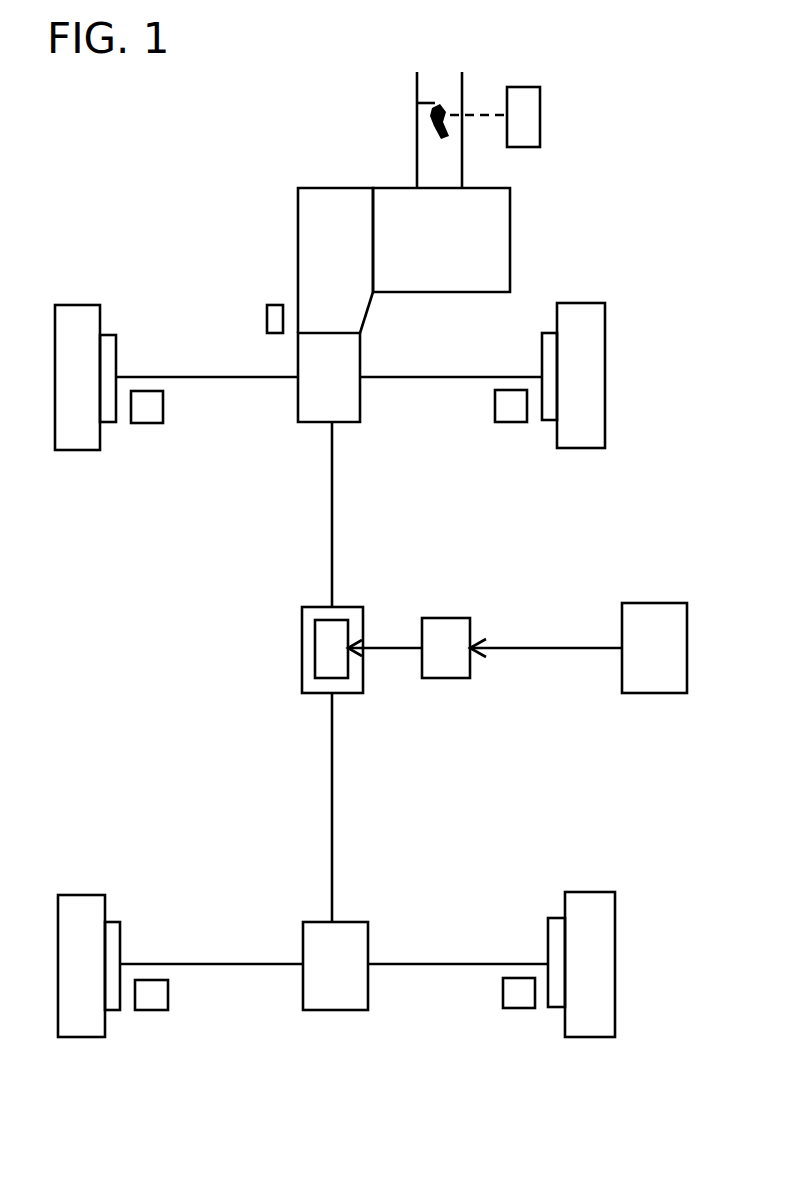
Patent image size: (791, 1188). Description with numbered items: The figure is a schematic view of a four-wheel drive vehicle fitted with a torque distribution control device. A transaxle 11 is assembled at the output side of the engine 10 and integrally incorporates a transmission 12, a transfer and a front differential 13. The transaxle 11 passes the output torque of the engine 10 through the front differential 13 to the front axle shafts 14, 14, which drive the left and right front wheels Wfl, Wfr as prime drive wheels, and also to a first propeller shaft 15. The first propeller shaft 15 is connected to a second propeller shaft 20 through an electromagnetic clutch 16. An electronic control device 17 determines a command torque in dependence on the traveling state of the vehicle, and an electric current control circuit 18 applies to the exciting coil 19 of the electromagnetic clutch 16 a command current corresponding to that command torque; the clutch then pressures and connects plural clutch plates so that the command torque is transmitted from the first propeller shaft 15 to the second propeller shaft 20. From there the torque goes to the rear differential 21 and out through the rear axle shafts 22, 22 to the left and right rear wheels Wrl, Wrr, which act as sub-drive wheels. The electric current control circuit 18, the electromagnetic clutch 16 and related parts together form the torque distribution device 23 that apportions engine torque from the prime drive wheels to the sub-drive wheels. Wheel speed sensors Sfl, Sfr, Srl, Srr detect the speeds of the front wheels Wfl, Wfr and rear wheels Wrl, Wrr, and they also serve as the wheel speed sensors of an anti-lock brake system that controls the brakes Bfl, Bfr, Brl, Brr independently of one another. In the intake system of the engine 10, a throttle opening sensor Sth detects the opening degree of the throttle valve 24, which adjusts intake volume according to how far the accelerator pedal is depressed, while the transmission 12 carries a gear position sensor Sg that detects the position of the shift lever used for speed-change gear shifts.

The engine 10 is at (510, 230).
The transaxle 11 is at (298, 268).
The transmission 12 is at (298, 215).
The front differential 13 is at (298, 405).
The front axle shafts 14 is at (235, 377).
The first propeller shaft 15 is at (332, 540).
The electromagnetic clutch 16 is at (312, 607).
The electronic control device 17 is at (655, 603).
The electric current control circuit 18 is at (455, 680).
The exciting coil 19 is at (315, 648).
The second propeller shaft 20 is at (332, 840).
The rear differential 21 is at (325, 930).
The rear axle shafts 22 is at (225, 964).
The torque distribution device 23 is at (410, 708).
The throttle valve 24 is at (418, 103).
The throttle opening sensor Sth is at (540, 108).
The gear position sensor Sg is at (270, 318).
The front left wheel Wfl is at (68, 305).
The front right wheel Wfr is at (605, 360).
The rear left wheel Wrl is at (72, 893).
The rear right wheel Wrr is at (597, 890).
The front left brake Bfl is at (108, 422).
The front right brake Bfr is at (548, 420).
The rear left brake Brl is at (112, 1010).
The rear right brake Brr is at (558, 1007).
The front left wheel speed sensor Sfl is at (147, 423).
The front right wheel speed sensor Sfr is at (510, 422).
The rear left wheel speed sensor Srl is at (150, 1010).
The rear right wheel speed sensor Srr is at (518, 1008).